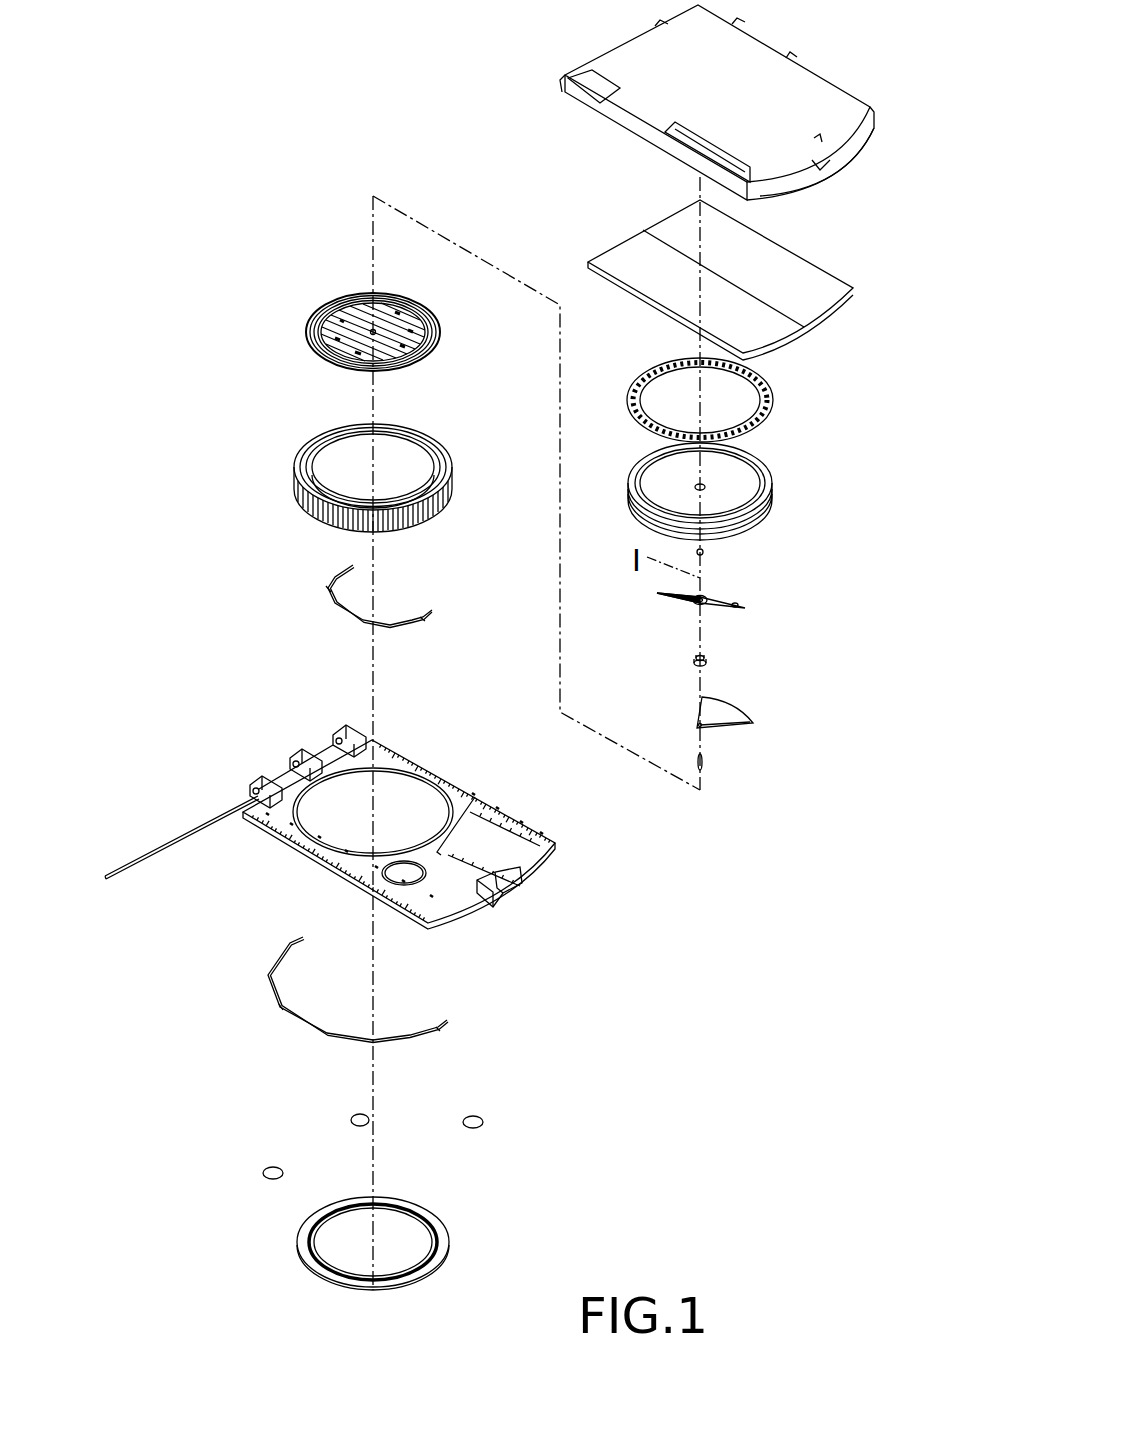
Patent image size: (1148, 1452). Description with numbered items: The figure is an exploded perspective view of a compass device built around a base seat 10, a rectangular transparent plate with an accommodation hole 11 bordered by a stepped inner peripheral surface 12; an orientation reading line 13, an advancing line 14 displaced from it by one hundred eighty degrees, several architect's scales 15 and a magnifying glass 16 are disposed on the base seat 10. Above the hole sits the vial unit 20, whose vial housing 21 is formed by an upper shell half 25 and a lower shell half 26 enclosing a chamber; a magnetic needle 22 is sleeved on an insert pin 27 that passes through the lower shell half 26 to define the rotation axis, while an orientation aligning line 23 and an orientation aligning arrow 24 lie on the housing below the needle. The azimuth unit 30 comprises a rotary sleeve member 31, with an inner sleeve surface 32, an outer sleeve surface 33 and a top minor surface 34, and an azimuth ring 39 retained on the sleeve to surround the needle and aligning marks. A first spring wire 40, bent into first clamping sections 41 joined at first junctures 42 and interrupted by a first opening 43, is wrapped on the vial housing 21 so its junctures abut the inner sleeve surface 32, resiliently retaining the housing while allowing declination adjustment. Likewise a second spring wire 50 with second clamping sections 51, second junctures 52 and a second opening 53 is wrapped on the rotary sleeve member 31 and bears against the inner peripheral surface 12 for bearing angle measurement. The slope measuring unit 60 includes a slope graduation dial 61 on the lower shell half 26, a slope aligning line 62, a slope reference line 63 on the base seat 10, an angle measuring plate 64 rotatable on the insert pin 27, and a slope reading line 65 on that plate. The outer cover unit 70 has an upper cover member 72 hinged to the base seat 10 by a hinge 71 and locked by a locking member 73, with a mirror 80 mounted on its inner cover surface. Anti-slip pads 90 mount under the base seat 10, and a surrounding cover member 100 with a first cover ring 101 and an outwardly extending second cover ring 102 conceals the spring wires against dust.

The base seat 10 is at (371, 816).
The accommodation hole 11 is at (308, 813).
The inner peripheral surface 12 is at (400, 777).
The orientation reading line 13 is at (305, 755).
The advancing line 14 is at (460, 822).
The architect's scales 15 is at (490, 808).
The magnifying glass 16 is at (425, 880).
The vial unit 20 is at (730, 543).
The vial housing 21 is at (775, 500).
The magnetic needle 22 is at (728, 602).
The orientation aligning line 23 is at (347, 322).
The orientation aligning arrow 24 is at (345, 330).
The upper shell half 25 is at (640, 488).
The lower shell half 26 is at (320, 353).
The insert pin 27 is at (703, 762).
The azimuth unit 30 is at (383, 480).
The rotary sleeve member 31 is at (453, 455).
The inner sleeve surface 32 is at (303, 463).
The outer sleeve surface 33 is at (303, 500).
The top minor surface 34 is at (310, 445).
The azimuth ring 39 is at (773, 392).
The first spring wire 40 is at (364, 613).
The first clamping sections 41 is at (332, 572).
The first junctures 42 is at (327, 588).
The first opening 43 is at (402, 587).
The second spring wire 50 is at (338, 1032).
The second clamping sections 51 is at (297, 1020).
The second junctures 52 is at (322, 1035).
The second opening 53 is at (417, 977).
The slope measuring unit 60 is at (769, 717).
The slope graduation dial 61 is at (368, 339).
The slope aligning line 62 is at (437, 342).
The slope reference line 63 is at (455, 792).
The angle measuring plate 64 is at (730, 723).
The slope reading line 65 is at (723, 713).
The outer cover unit 70 is at (732, 100).
The hinge 71 is at (262, 775).
The upper cover member 72 is at (817, 83).
The locking member 73 is at (820, 167).
The mirror 80 is at (803, 258).
The anti-slip pads 90 is at (358, 1127).
The surrounding cover member 100 is at (313, 1263).
The first cover ring 101 is at (307, 1258).
The second cover ring 102 is at (322, 1278).